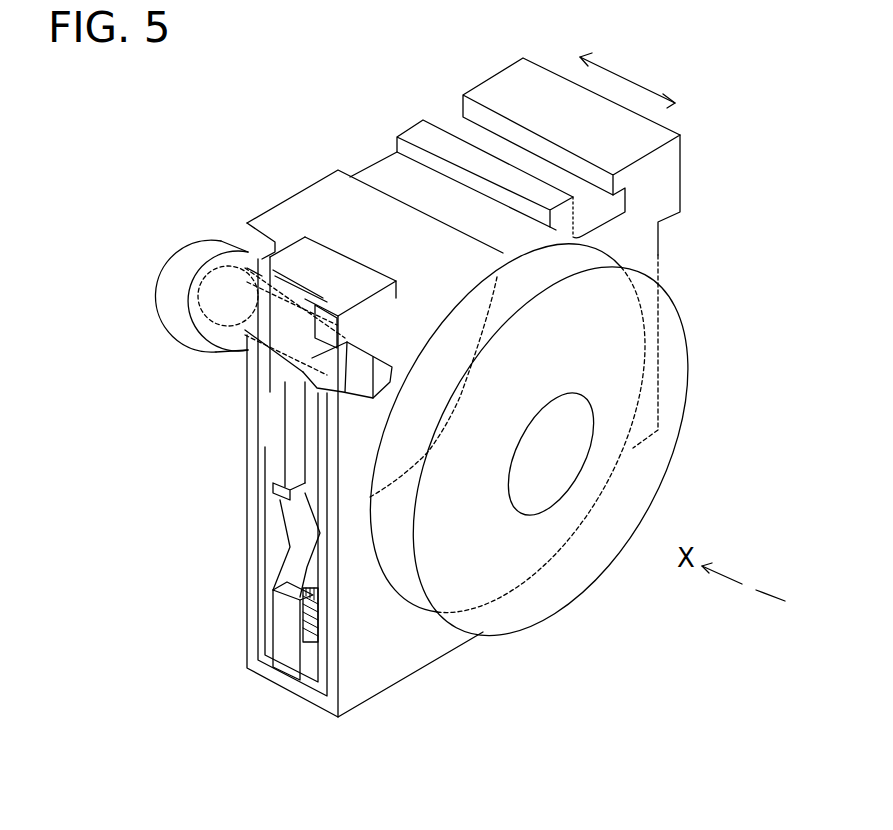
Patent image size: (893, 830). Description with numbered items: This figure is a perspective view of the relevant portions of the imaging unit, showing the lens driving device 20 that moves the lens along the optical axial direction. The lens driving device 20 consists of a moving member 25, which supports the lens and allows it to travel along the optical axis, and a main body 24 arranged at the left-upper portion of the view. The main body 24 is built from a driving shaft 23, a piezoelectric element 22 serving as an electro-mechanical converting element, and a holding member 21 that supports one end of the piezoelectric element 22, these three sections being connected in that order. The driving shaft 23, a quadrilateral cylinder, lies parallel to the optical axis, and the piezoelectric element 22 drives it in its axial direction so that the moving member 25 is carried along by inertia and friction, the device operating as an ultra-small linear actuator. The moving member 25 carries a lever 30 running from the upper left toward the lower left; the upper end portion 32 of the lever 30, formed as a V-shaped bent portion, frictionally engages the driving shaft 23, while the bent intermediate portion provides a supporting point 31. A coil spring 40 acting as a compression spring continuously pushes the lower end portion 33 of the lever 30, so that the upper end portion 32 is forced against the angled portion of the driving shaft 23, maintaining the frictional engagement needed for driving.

The lens driving device 20 is at (183, 117).
The holding member 21 is at (172, 302).
The piezoelectric element 22 is at (212, 301).
The driving shaft 23 is at (232, 294).
The main body 24 is at (178, 182).
The moving member 25 is at (277, 207).
The lever 30 is at (222, 524).
The supporting point 31 is at (280, 500).
The upper end portion 32 is at (285, 368).
The lower end portion 33 is at (242, 631).
The coil spring 40 is at (313, 645).